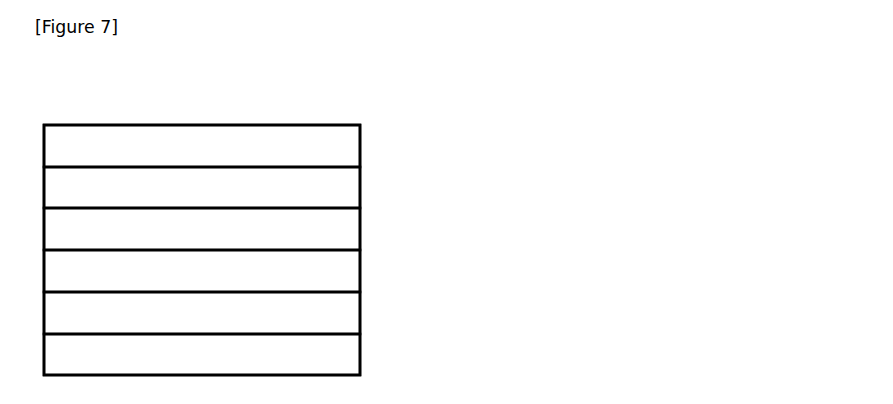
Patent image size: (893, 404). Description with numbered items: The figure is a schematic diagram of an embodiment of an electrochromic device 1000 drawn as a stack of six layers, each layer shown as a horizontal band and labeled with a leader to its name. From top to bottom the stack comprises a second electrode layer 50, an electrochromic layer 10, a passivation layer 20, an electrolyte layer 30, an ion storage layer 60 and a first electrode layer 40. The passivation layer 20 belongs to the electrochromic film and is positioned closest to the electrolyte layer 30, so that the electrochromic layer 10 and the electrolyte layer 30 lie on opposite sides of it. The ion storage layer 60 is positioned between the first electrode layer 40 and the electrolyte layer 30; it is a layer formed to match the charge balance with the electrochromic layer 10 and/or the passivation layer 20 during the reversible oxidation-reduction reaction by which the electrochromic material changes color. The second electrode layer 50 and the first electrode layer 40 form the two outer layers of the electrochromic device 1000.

The electrochromic device 1000 is at (336, 95).
The second electrode layer 50 is at (350, 150).
The electrochromic layer 10 is at (350, 191).
The passivation layer 20 is at (350, 233).
The electrolyte layer 30 is at (350, 275).
The ion storage layer 60 is at (350, 320).
The first electrode layer 40 is at (350, 357).